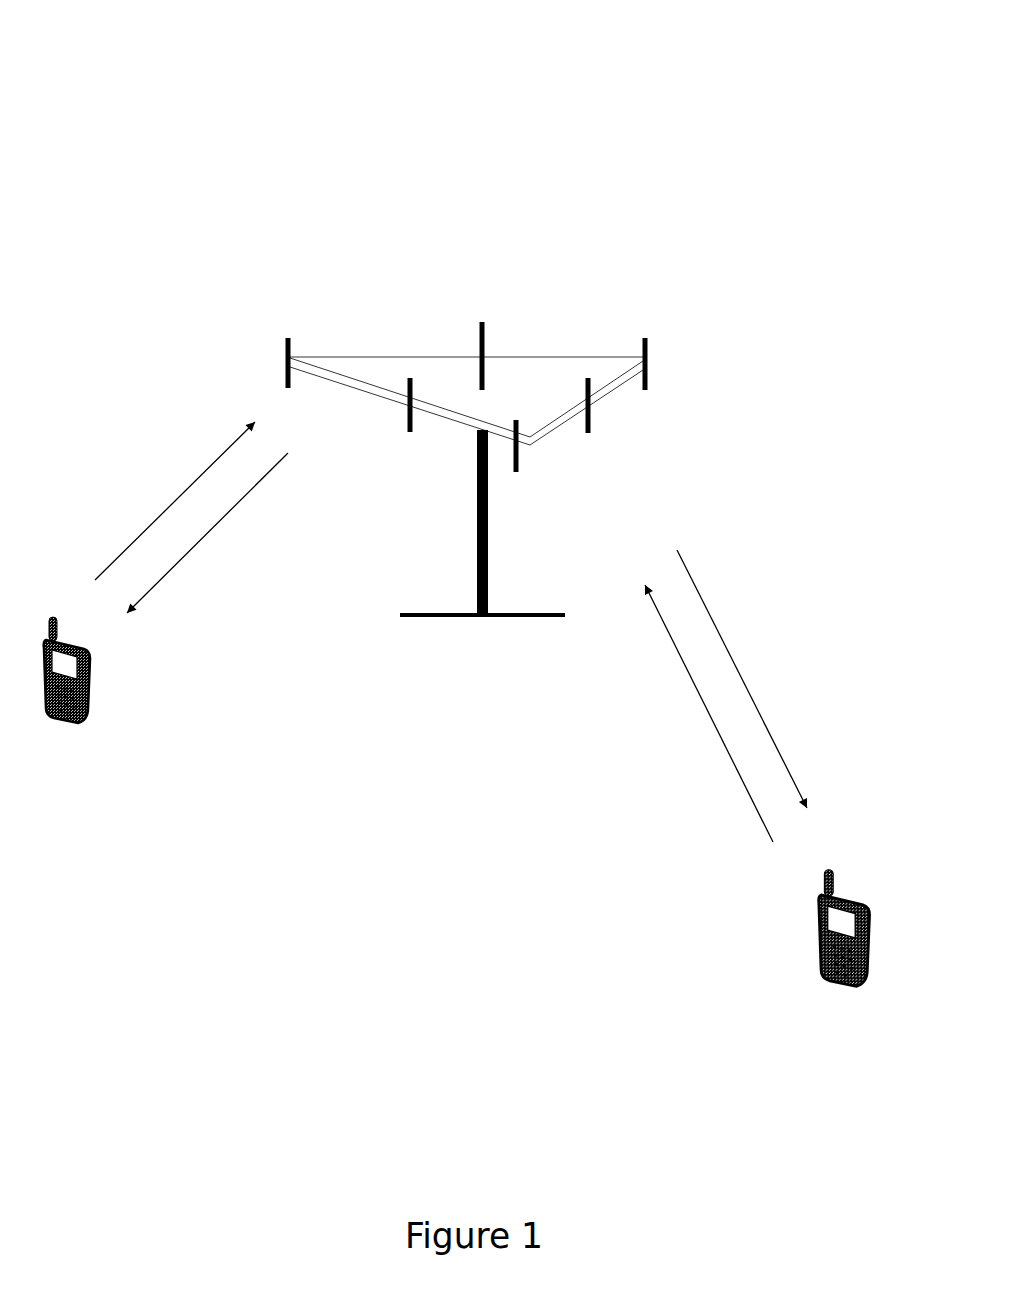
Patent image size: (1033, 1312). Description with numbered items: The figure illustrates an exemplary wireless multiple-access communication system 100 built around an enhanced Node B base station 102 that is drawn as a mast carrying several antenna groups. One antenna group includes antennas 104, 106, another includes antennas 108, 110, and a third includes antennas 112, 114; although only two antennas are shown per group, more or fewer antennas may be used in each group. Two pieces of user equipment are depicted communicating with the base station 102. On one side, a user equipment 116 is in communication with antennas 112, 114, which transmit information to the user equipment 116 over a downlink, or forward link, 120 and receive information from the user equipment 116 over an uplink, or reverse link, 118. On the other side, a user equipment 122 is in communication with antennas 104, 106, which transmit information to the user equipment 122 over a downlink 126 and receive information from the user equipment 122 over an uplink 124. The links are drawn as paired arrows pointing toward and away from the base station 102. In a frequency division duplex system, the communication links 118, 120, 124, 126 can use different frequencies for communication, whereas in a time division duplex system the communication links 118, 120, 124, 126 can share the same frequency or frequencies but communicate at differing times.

The wireless multiple-access communication system 100 is at (742, 108).
The enhanced Node B base station 102 is at (456, 561).
The antenna 104 is at (583, 459).
The antenna 106 is at (659, 414).
The antenna 108 is at (713, 364).
The antenna 110 is at (545, 331).
The antenna 112 is at (232, 338).
The antenna 114 is at (357, 439).
The user equipment 116 is at (120, 704).
The uplink 118 is at (155, 501).
The downlink 120 is at (207, 556).
The user equipment 122 is at (796, 955).
The uplink 124 is at (684, 713).
The downlink 126 is at (761, 679).